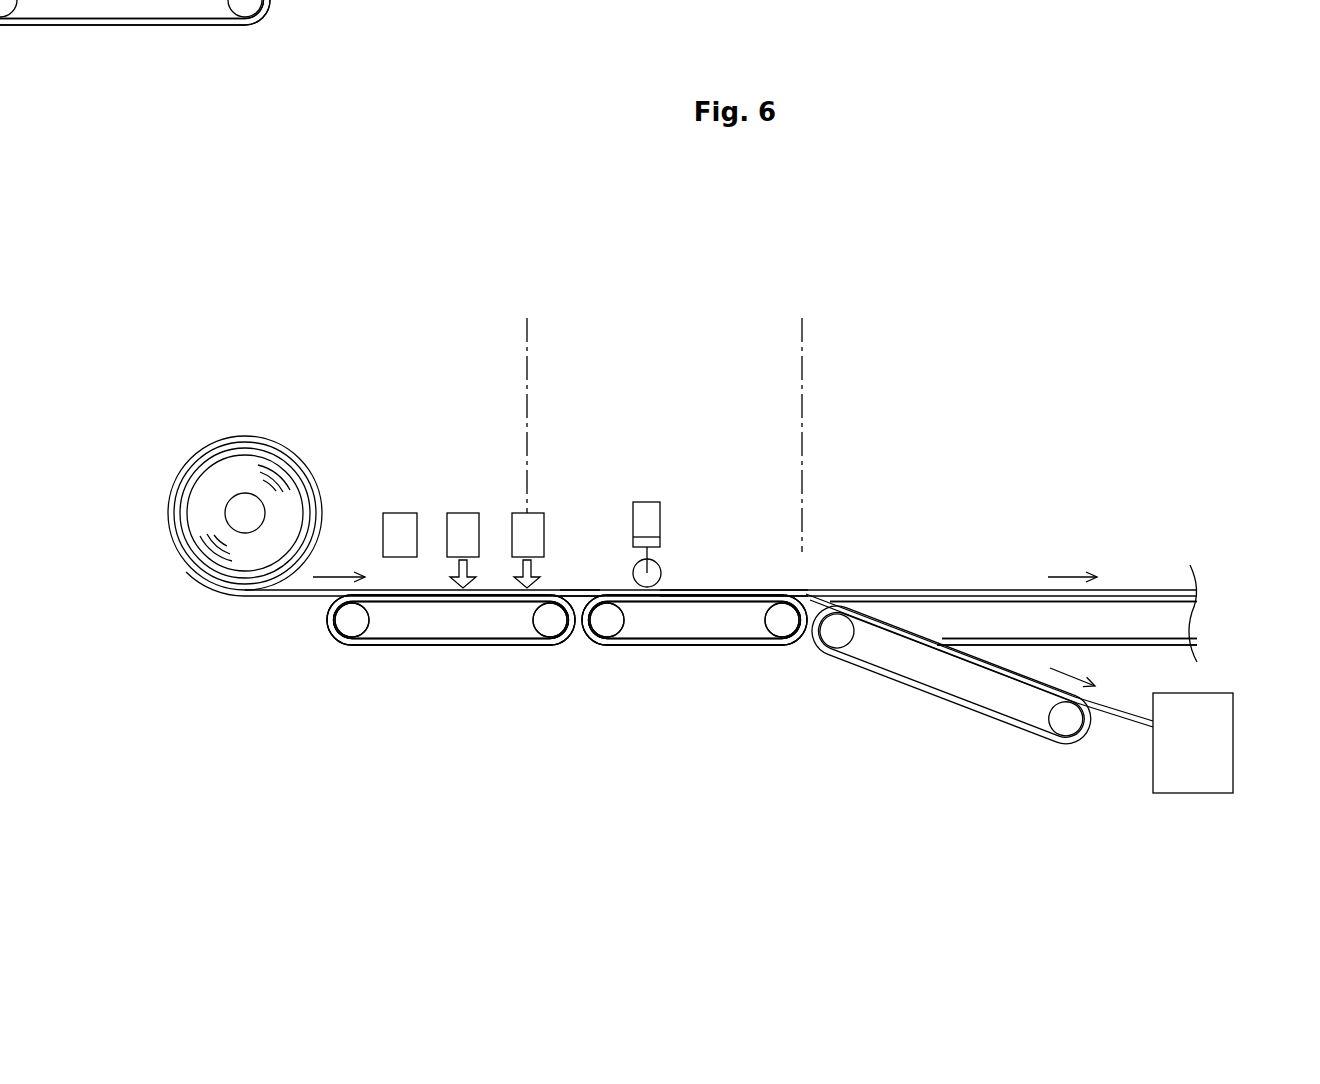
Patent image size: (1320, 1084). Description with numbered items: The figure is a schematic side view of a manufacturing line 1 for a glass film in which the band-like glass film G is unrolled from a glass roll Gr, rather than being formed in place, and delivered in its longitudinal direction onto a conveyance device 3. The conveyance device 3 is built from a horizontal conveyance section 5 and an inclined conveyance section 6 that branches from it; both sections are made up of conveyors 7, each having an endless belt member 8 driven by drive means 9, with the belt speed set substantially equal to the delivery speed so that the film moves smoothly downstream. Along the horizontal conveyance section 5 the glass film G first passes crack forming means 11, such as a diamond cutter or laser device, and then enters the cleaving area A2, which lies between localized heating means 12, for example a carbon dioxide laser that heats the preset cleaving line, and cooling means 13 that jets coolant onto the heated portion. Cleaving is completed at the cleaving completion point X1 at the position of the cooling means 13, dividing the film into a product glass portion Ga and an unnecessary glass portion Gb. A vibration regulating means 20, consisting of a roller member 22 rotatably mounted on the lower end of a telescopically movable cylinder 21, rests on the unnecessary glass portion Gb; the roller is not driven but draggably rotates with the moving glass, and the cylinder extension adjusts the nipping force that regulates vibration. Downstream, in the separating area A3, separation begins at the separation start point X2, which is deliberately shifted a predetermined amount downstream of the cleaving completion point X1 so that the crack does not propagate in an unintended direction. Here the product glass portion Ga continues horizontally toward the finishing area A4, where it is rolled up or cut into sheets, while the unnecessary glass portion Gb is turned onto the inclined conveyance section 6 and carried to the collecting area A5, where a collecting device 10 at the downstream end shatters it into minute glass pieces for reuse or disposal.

The manufacturing line 1 is at (1032, 312).
The conveyance device 3 is at (588, 760).
The horizontal conveyance section 5 is at (357, 670).
The inclined conveyance section 6 is at (906, 740).
The conveyor 7 is at (463, 650).
The belt member 8 is at (400, 646).
The drive means 9 is at (556, 626).
The collecting device 10 is at (1200, 772).
The crack forming means 11 is at (401, 518).
The localized heating means 12 is at (464, 518).
The cooling means 13 is at (538, 520).
The vibration regulating means 20 is at (655, 500).
The cylinder 21 is at (636, 515).
The roller member 22 is at (662, 573).
The glass film G is at (291, 600).
The glass roll Gr is at (214, 448).
The product glass portion Ga is at (755, 588).
The unnecessary glass portion Gb is at (583, 588).
The cleaving area A2 is at (498, 556).
The separating area A3 is at (816, 570).
The finishing area A4 is at (1238, 582).
The collecting area A5 is at (1140, 820).
The cleaving completion point X1 is at (526, 400).
The separation start point X2 is at (801, 419).